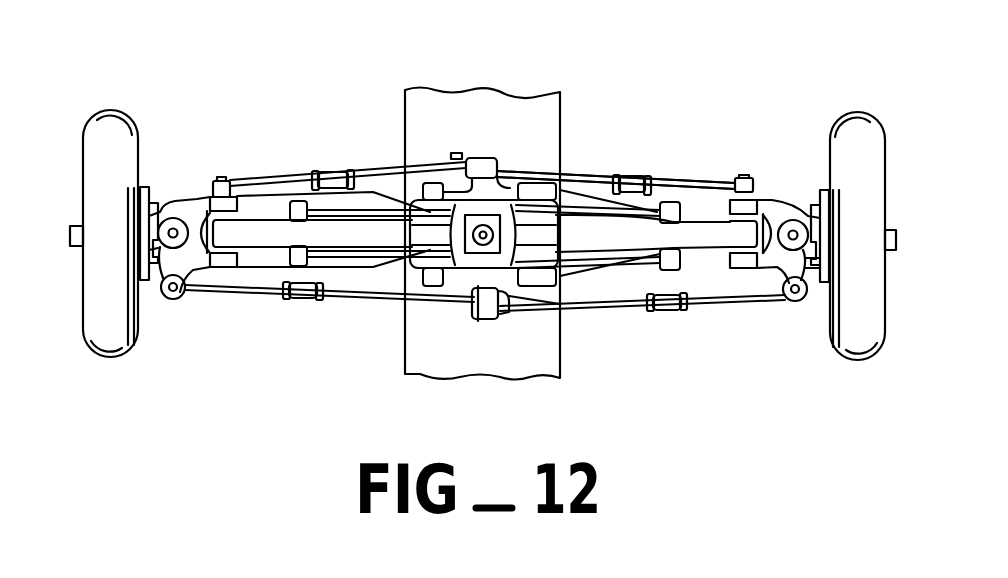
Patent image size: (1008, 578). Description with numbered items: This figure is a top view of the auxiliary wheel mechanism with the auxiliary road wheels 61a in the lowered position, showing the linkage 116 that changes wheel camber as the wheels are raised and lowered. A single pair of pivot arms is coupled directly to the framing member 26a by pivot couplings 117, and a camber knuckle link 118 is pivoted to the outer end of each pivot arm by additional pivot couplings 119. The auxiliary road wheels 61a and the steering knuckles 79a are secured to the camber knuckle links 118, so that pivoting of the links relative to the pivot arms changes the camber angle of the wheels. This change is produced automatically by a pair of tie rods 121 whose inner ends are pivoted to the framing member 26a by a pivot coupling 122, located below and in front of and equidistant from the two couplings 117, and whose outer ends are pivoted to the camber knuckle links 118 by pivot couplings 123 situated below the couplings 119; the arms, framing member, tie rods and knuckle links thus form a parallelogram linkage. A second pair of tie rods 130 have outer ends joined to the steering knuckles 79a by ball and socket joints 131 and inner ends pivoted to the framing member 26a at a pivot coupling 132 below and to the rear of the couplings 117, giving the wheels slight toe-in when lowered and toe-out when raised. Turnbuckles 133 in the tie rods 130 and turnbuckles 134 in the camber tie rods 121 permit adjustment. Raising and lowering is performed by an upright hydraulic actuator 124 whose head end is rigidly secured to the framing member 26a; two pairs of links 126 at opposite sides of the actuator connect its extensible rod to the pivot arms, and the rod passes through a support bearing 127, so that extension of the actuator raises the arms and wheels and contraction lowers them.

The framing member 26a is at (560, 365).
The auxiliary road wheels 61a is at (108, 358).
The steering knuckles 79a is at (160, 212).
The linkage 116 is at (672, 145).
The pivot couplings 117 is at (562, 312).
The camber knuckle links 118 is at (211, 268).
The pivot couplings 119 is at (221, 177).
The tie rods 121 is at (358, 168).
The pivot coupling 122 is at (456, 153).
The pivot couplings 123 is at (235, 187).
The hydraulic actuator 124 is at (517, 236).
The links 126 is at (395, 210).
The support bearing 127 is at (455, 267).
The tie rods 130 is at (255, 294).
The ball and socket joints 131 is at (170, 300).
The pivot coupling 132 is at (511, 318).
The turnbuckles 133 is at (305, 301).
The turnbuckles 134 is at (322, 171).